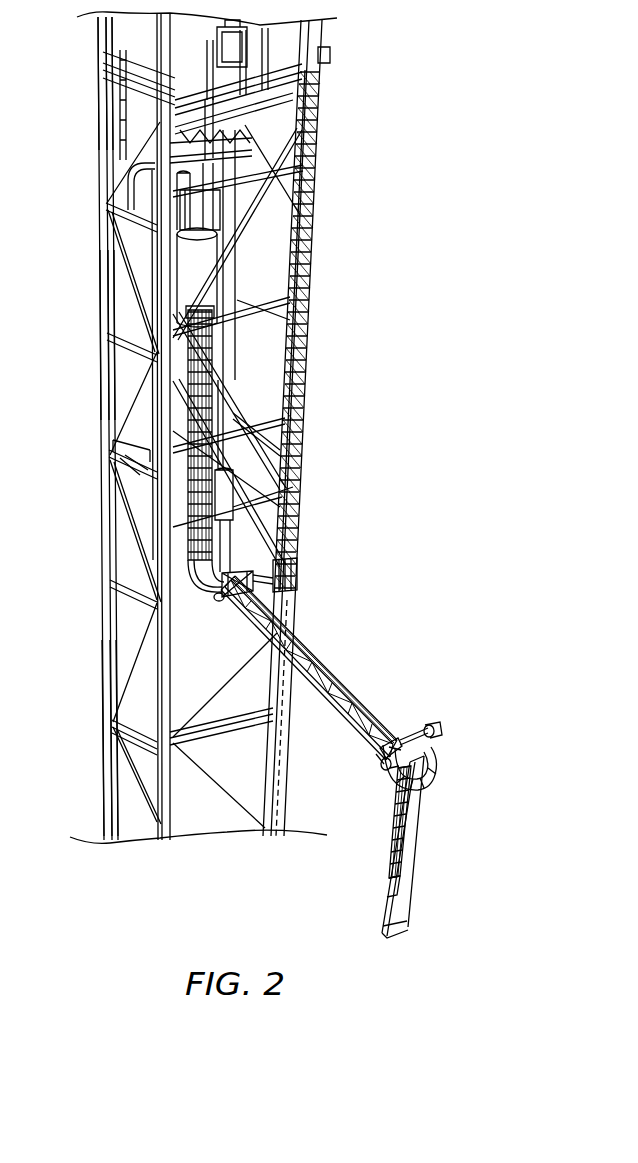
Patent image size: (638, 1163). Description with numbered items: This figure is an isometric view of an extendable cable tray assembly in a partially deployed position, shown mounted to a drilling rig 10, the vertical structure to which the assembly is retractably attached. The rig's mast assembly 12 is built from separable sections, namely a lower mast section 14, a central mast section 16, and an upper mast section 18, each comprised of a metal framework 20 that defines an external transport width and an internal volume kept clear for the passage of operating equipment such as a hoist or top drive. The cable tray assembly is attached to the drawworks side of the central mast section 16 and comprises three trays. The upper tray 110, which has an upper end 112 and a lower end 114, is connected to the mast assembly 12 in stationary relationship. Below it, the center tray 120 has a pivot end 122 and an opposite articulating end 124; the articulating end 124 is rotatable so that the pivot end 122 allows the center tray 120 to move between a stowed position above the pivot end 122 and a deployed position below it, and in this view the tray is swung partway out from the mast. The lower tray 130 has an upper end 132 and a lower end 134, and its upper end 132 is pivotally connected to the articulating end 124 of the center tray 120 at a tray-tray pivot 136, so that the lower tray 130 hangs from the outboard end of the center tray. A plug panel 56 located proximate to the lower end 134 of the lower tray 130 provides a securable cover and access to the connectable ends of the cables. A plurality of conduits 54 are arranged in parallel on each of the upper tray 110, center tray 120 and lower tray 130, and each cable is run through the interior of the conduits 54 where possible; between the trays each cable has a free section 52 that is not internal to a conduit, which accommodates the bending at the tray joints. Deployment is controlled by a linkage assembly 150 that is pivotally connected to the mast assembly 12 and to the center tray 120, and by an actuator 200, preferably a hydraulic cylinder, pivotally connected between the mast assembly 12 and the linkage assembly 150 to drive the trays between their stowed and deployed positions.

The drilling rig 10 is at (418, 185).
The mast assembly 12 is at (333, 387).
The lower mast section 14 is at (105, 678).
The central mast section 16 is at (100, 287).
The upper mast section 18 is at (93, 30).
The metal framework 20 is at (157, 457).
The free section 52 is at (437, 763).
The conduits 54 is at (397, 838).
The plug panel 56 is at (403, 893).
The upper tray 110 is at (188, 366).
The upper end 112 is at (207, 333).
The lower end 114 is at (178, 556).
The center tray 120 is at (325, 667).
The pivot end 122 is at (220, 600).
The articulating end 124 is at (377, 746).
The lower tray 130 is at (427, 820).
The upper end 132 is at (435, 728).
The lower end 134 is at (410, 923).
The tray-tray pivot 136 is at (380, 766).
The linkage assembly 150 is at (290, 585).
The actuator 200 is at (238, 520).